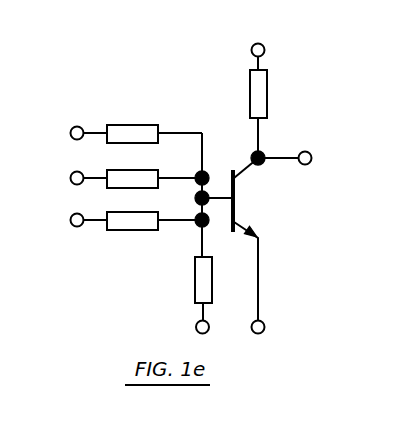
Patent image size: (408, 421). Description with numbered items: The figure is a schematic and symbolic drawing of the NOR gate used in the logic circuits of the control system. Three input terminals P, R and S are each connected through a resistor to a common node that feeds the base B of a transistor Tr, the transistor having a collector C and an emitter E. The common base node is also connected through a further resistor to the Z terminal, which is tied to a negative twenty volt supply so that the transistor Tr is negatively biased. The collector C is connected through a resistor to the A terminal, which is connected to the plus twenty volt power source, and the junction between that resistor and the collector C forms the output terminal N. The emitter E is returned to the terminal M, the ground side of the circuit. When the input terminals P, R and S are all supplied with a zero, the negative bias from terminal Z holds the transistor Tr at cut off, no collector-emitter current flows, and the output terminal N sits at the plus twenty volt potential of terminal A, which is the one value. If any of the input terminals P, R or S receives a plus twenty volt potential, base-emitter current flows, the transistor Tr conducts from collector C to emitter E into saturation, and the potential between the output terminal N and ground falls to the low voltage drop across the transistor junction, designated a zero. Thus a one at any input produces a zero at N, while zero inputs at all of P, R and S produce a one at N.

The A terminal A is at (258, 90).
The output terminal N is at (293, 158).
The input terminal P is at (126, 134).
The input terminal R is at (126, 179).
The input terminal S is at (126, 221).
The Z terminal Z is at (194, 295).
The terminal M is at (267, 327).
The transistor Tr is at (222, 190).
The base B is at (230, 215).
The collector C is at (243, 177).
The emitter E is at (237, 218).